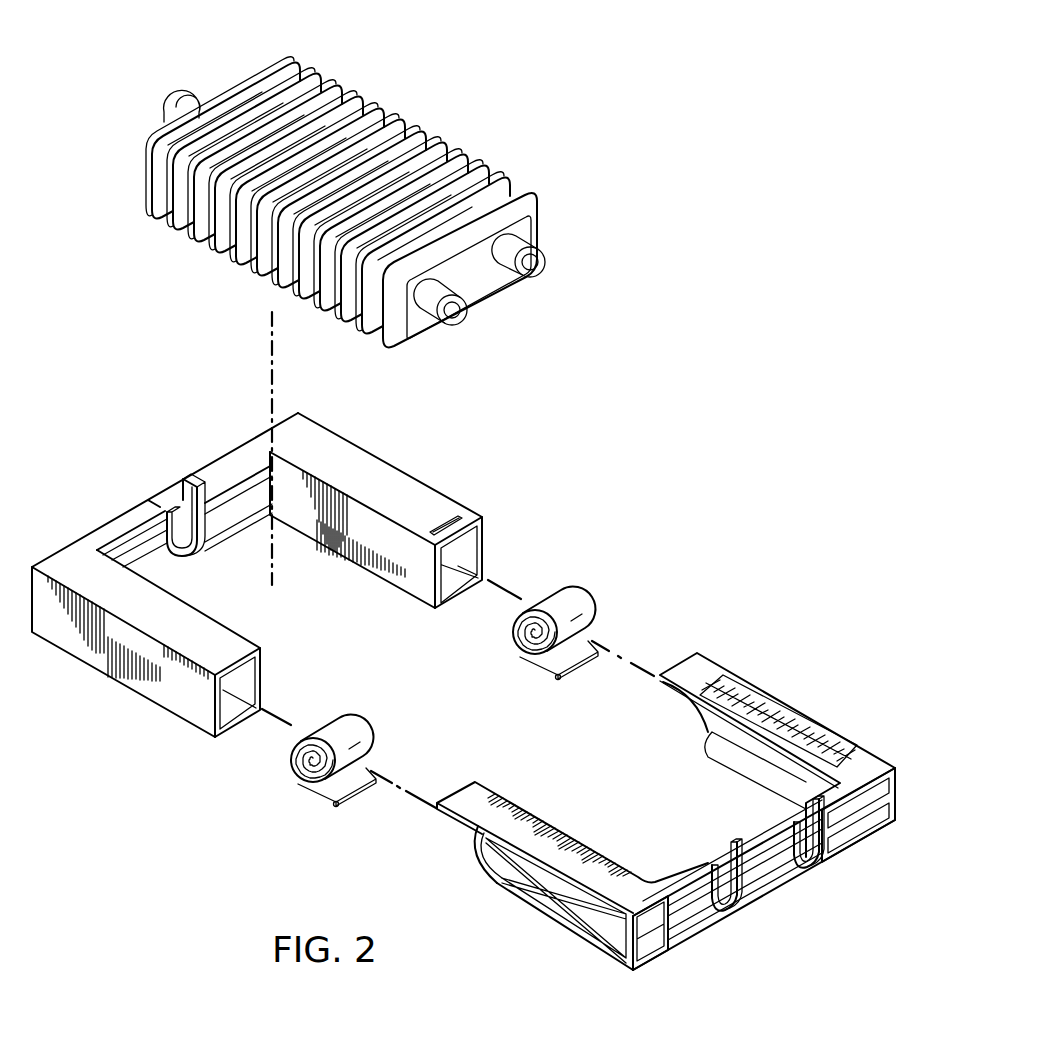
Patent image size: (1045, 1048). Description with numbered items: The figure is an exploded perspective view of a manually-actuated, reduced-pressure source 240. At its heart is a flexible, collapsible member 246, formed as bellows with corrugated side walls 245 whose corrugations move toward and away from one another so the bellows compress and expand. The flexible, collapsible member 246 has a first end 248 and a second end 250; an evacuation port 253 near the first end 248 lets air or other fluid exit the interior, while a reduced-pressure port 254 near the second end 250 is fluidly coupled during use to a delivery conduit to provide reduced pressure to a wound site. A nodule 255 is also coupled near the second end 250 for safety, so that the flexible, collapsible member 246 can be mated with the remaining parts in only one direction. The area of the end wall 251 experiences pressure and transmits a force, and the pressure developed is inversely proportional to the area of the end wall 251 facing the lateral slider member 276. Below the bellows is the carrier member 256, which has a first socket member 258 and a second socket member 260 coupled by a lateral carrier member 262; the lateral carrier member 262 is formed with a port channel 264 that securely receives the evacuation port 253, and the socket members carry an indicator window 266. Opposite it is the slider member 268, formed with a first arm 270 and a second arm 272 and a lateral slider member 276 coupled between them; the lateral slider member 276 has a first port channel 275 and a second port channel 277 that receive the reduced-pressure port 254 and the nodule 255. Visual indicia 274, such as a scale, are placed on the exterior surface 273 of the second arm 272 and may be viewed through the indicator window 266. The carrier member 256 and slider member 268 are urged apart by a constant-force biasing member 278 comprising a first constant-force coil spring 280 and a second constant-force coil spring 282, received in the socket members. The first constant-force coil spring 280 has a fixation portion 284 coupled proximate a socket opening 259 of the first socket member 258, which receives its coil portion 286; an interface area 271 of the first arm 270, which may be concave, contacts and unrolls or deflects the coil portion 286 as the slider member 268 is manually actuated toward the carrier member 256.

The manually-actuated, reduced-pressure source 240 is at (703, 416).
The corrugated side walls 245 is at (437, 134).
The flexible, collapsible member 246 is at (383, 101).
The first end 248 is at (272, 66).
The second end 250 is at (541, 196).
The end wall 251 is at (400, 343).
The evacuation port 253 is at (180, 89).
The reduced-pressure port 254 is at (470, 304).
The nodule 255 is at (549, 264).
The carrier member 256 is at (384, 507).
The first socket member 258 is at (151, 665).
The socket opening 259 is at (237, 729).
The second socket member 260 is at (360, 459).
The lateral carrier member 262 is at (108, 521).
The port channel 264 is at (170, 511).
The indicator window 266 is at (459, 516).
The slider member 268 is at (779, 730).
The first arm 270 is at (563, 857).
The interface area 271 is at (484, 861).
The second arm 272 is at (753, 688).
The exterior surface 273 is at (865, 757).
The visual indicia 274 is at (815, 734).
The first port channel 275 is at (715, 866).
The lateral slider member 276 is at (692, 943).
The second port channel 277 is at (797, 823).
The constant-force biasing member 278 is at (527, 594).
The first constant-force coil spring 280 is at (358, 753).
The second constant-force coil spring 282 is at (518, 637).
The fixation portion 284 is at (338, 806).
The coil portion 286 is at (348, 713).